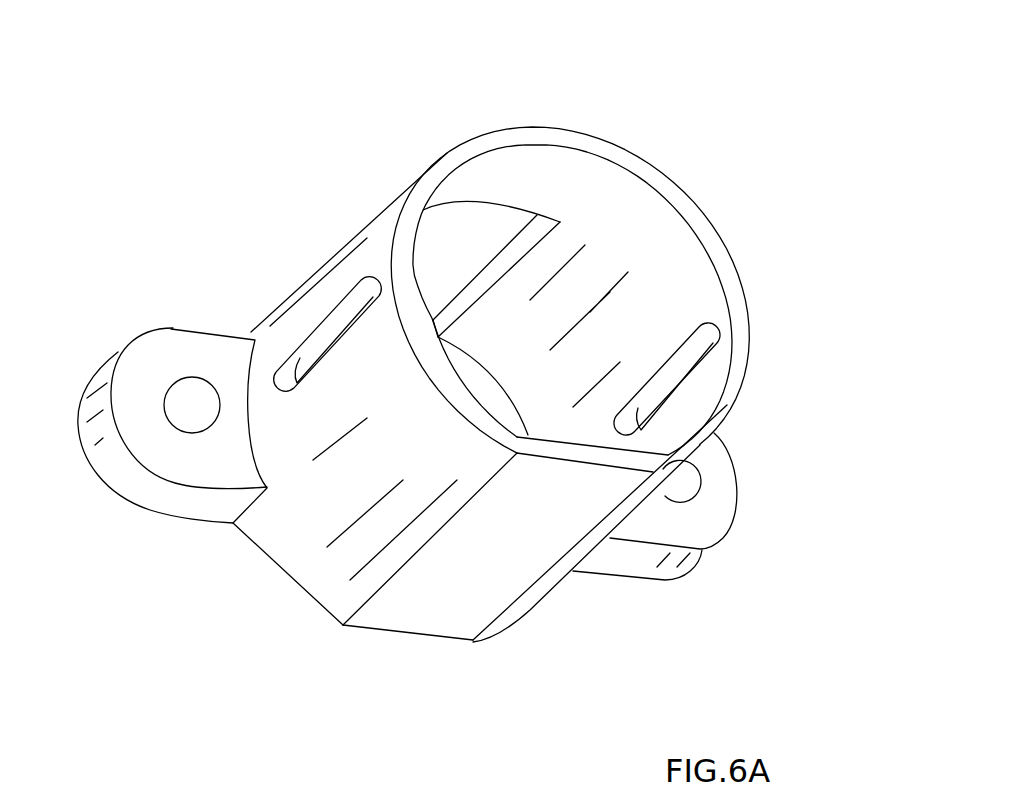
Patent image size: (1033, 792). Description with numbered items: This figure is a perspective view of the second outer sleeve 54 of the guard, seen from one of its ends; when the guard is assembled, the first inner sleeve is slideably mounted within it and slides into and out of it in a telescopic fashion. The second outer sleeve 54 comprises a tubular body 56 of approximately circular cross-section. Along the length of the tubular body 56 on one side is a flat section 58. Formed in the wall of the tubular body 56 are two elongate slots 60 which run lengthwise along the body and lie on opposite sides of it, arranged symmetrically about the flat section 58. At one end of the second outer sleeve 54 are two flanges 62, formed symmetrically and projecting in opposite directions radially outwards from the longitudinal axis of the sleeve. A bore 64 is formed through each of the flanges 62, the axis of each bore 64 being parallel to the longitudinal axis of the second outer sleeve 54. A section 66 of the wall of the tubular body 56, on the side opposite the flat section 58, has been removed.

The second outer sleeve 54 is at (602, 100).
The tubular body 56 is at (330, 537).
The flat section 58 is at (463, 588).
The elongate slots 60 is at (337, 332).
The flanges 62 is at (157, 433).
The bore 64 is at (193, 388).
The section 66 is at (481, 256).